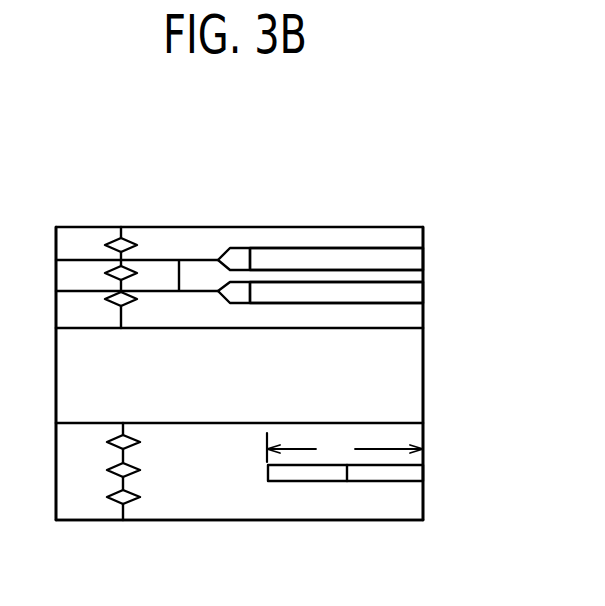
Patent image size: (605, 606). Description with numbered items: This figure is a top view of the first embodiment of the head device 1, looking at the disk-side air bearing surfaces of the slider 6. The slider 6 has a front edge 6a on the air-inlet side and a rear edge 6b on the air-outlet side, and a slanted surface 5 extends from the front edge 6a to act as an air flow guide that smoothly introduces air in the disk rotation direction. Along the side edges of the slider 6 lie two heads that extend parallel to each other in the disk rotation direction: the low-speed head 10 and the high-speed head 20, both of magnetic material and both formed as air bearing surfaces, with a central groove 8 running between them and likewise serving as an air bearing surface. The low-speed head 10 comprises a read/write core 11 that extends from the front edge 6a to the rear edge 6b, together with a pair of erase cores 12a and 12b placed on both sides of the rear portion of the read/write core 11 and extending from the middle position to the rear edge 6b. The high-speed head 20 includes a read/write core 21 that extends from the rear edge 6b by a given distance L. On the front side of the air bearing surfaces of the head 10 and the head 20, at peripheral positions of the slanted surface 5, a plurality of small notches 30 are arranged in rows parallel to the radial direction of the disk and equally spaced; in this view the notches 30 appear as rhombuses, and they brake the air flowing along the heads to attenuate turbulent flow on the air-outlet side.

The head device 1 is at (239, 218).
The slanted surface 5 is at (85, 505).
The slider 6 is at (218, 505).
The front edge 6a is at (57, 227).
The rear edge 6b is at (422, 227).
The central groove 8 is at (407, 370).
The low-speed head 10 is at (355, 297).
The read/write core 11 is at (162, 273).
The erase core 12a is at (297, 260).
The erase core 12b is at (347, 290).
The high-speed head 20 is at (385, 507).
The read/write core 21 is at (330, 474).
The small notches 30 is at (130, 227).